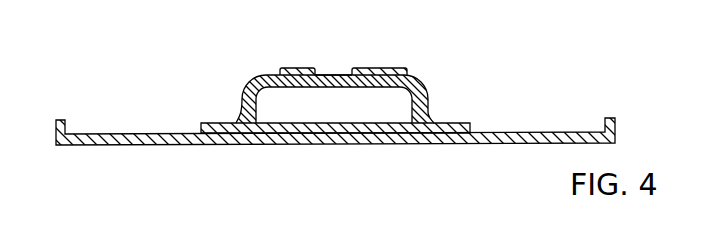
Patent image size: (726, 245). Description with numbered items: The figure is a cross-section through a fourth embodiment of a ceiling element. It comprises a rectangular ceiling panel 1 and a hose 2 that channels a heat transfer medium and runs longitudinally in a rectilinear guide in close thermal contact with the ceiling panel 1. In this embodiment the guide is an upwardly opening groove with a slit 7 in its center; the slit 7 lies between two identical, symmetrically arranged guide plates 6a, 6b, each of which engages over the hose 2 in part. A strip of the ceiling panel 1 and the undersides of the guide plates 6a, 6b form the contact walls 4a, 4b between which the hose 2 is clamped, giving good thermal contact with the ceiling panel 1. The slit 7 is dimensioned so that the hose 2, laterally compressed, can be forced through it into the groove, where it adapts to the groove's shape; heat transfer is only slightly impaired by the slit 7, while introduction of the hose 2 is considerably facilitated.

The ceiling panel 1 is at (532, 138).
The hose 2 is at (337, 70).
The contact wall 4a is at (320, 137).
The contact wall 4b is at (283, 70).
The guide plate 6a is at (258, 75).
The guide plate 6b is at (412, 72).
The slit 7 is at (317, 70).